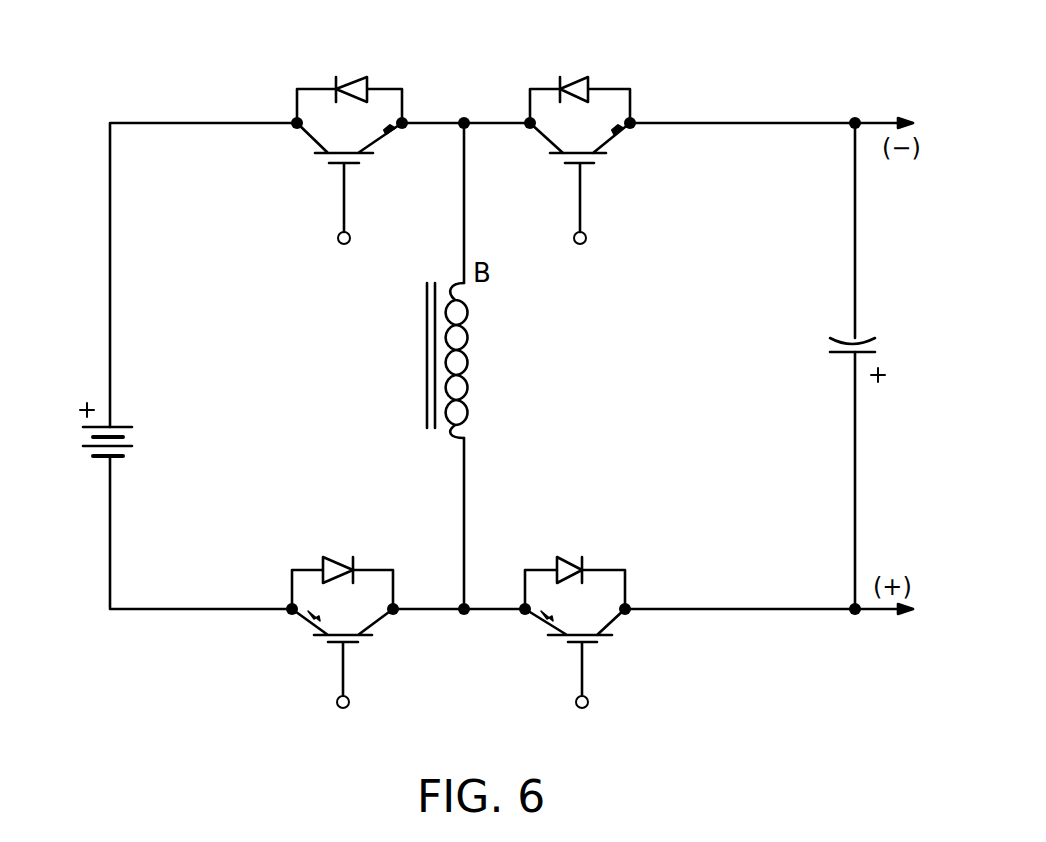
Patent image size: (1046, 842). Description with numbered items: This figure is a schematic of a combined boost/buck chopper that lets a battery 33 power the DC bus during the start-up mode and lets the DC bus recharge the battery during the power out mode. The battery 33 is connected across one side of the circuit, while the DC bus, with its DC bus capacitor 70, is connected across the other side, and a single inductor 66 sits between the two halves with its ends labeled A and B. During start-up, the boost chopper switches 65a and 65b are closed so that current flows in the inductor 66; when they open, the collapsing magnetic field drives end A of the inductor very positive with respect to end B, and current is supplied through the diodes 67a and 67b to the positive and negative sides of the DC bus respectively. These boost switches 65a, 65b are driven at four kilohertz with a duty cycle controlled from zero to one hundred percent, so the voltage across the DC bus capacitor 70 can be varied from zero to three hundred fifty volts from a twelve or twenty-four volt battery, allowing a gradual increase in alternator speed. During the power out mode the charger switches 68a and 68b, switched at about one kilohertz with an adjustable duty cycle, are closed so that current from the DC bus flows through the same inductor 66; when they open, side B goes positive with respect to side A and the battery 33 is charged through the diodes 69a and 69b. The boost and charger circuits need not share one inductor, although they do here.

The battery 33 is at (85, 393).
The boost chopper switch 65a is at (330, 167).
The boost chopper switch 65b is at (323, 643).
The inductor 66 is at (427, 325).
The diode 67a is at (575, 75).
The diode 67b is at (570, 557).
The charger switch 68a is at (570, 167).
The charger switch 68b is at (565, 645).
The diode 69a is at (353, 75).
The diode 69b is at (343, 557).
The DC bus capacitor 70 is at (865, 334).